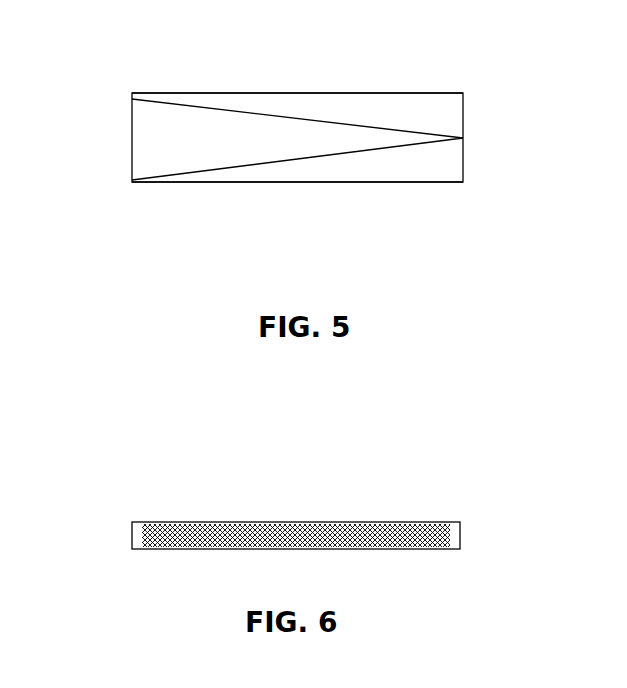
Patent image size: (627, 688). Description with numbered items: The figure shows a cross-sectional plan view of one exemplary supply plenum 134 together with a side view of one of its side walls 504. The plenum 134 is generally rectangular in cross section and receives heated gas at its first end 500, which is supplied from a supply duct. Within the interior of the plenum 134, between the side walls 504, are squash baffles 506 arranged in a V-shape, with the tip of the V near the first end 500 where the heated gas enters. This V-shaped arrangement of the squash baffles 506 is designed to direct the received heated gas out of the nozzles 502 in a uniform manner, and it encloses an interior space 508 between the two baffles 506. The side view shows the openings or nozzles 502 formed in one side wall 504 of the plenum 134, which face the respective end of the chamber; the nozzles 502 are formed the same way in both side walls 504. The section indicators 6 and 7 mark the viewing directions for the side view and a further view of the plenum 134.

In FIG. 5, the first end 500 is at (465, 158).
In FIG. 6, the openings 502 is at (453, 535).
In FIG. 5, the side walls 504 is at (335, 93).
In FIG. 6, the side walls 504 is at (296, 559).
In FIG. 5, the squash baffles 506 is at (203, 106).
In FIG. 5, the interior space 508 is at (195, 144).
In FIG. 5, the supply plenum 134 is at (297, 294).
In FIG. 5, the section line 7 is at (135, 91).
In FIG. 5, the section line 6 is at (132, 186).